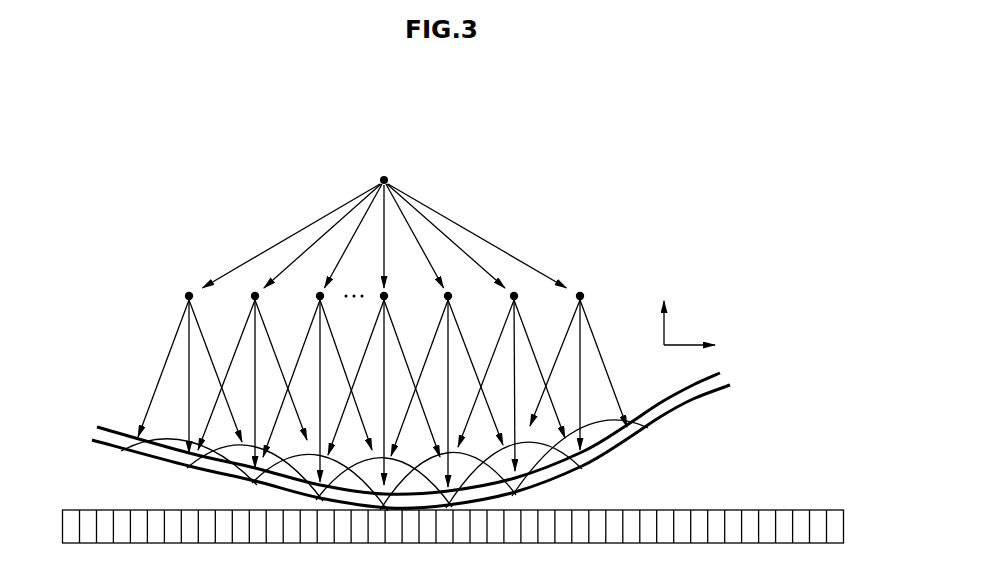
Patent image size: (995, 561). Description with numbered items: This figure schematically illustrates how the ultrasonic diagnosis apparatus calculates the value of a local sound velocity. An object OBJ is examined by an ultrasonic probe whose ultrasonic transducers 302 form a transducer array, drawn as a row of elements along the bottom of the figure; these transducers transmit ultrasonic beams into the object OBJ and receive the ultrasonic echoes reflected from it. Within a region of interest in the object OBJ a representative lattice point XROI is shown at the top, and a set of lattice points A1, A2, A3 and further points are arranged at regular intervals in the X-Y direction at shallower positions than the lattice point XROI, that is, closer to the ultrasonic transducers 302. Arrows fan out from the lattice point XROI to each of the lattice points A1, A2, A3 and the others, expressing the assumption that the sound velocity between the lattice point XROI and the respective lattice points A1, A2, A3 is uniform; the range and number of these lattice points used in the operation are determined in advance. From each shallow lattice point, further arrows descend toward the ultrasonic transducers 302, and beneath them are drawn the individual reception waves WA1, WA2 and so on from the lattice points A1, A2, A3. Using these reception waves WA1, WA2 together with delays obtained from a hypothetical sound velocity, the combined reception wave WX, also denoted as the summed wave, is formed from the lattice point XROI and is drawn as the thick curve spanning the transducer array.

The ultrasonic transducers 302 is at (90, 518).
The object OBJ is at (652, 220).
The lattice point in region of interest XROI is at (384, 212).
The lattice point A1 is at (156, 353).
The lattice point A2 is at (252, 375).
The lattice point A3 is at (317, 382).
The reception wave WA1 is at (225, 450).
The reception wave WA2 is at (220, 482).
The combined reception wave WX is at (700, 410).